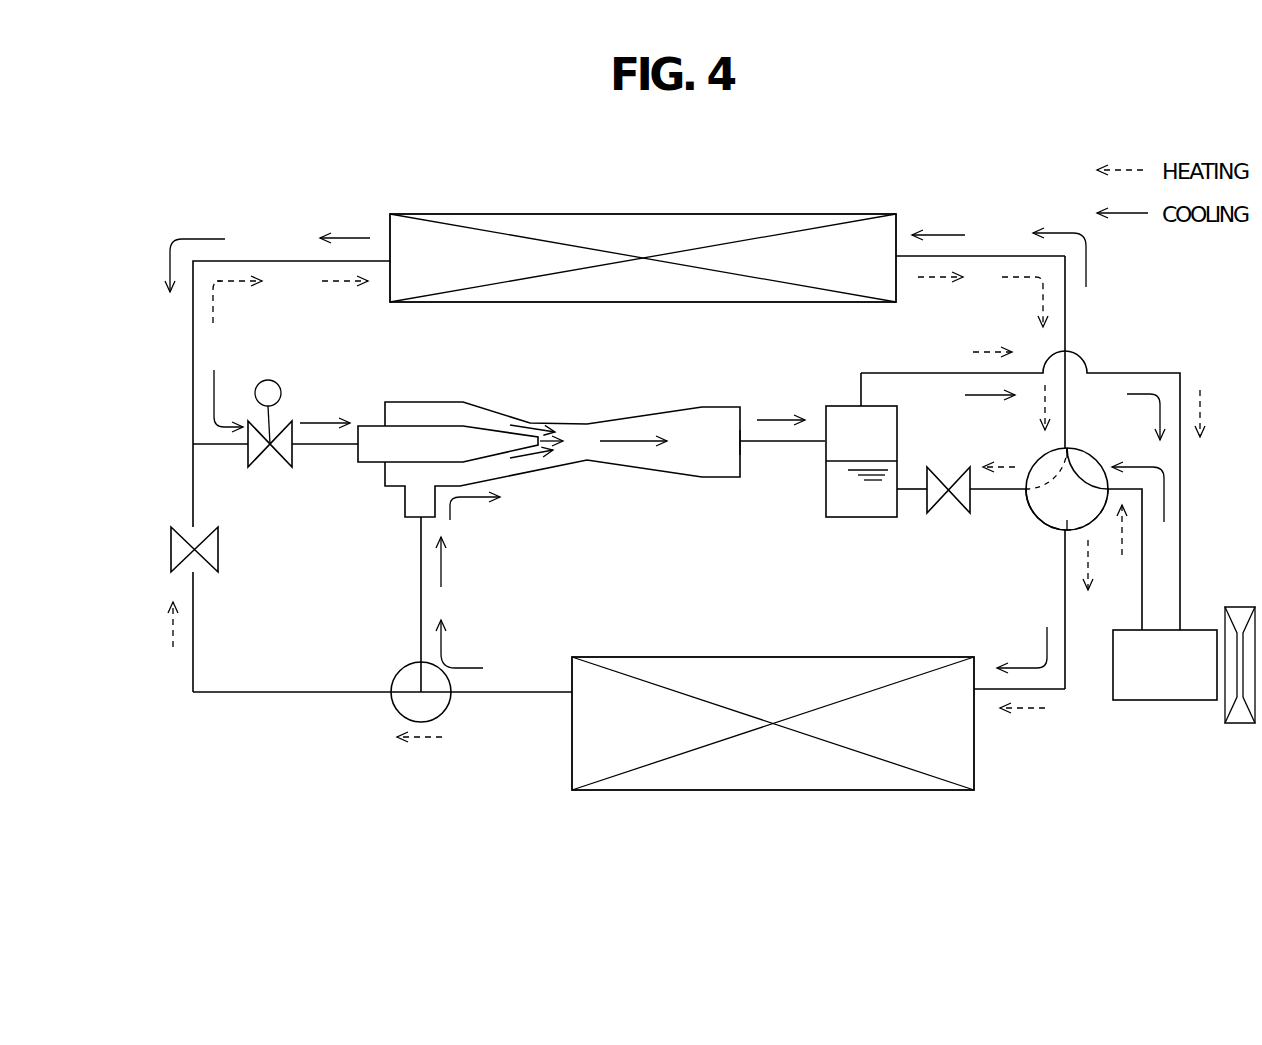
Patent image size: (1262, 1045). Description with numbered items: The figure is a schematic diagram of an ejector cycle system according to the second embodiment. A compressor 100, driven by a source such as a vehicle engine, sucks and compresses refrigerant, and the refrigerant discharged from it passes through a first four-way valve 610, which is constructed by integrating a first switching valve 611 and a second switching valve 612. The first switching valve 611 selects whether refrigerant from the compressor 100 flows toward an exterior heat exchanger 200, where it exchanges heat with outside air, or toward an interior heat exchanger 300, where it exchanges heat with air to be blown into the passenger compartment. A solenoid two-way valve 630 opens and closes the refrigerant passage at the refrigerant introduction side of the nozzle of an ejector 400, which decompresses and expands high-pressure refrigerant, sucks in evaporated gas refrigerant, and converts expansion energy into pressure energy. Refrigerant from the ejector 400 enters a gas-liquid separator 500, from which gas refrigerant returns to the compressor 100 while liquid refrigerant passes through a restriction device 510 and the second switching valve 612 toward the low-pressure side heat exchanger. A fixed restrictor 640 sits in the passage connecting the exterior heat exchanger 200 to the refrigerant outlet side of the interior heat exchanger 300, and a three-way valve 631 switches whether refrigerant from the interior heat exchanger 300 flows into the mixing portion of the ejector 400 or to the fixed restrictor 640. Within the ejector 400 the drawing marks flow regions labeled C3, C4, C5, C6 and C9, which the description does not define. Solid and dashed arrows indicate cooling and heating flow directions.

The compressor 100 is at (1137, 702).
The exterior heat exchanger 200 is at (824, 213).
The interior heat exchanger 300 is at (910, 792).
The ejector 400 is at (564, 445).
The gas-liquid separator 500 is at (897, 410).
The restriction device 510 is at (935, 512).
The first four-way valve 610 is at (1021, 525).
The first switching valve 611 is at (1067, 489).
The second switching valve 612 is at (1027, 514).
The solenoid two-way valve 630 is at (280, 462).
The three-way valve 631 is at (400, 668).
The fixed restrictor 640 is at (215, 570).
The nozzle outlet region C3 is at (542, 463).
The mixing section C4 is at (577, 443).
The diffuser section C5 is at (637, 452).
The ejector outlet C6 is at (743, 455).
The suction chamber C9 is at (495, 463).